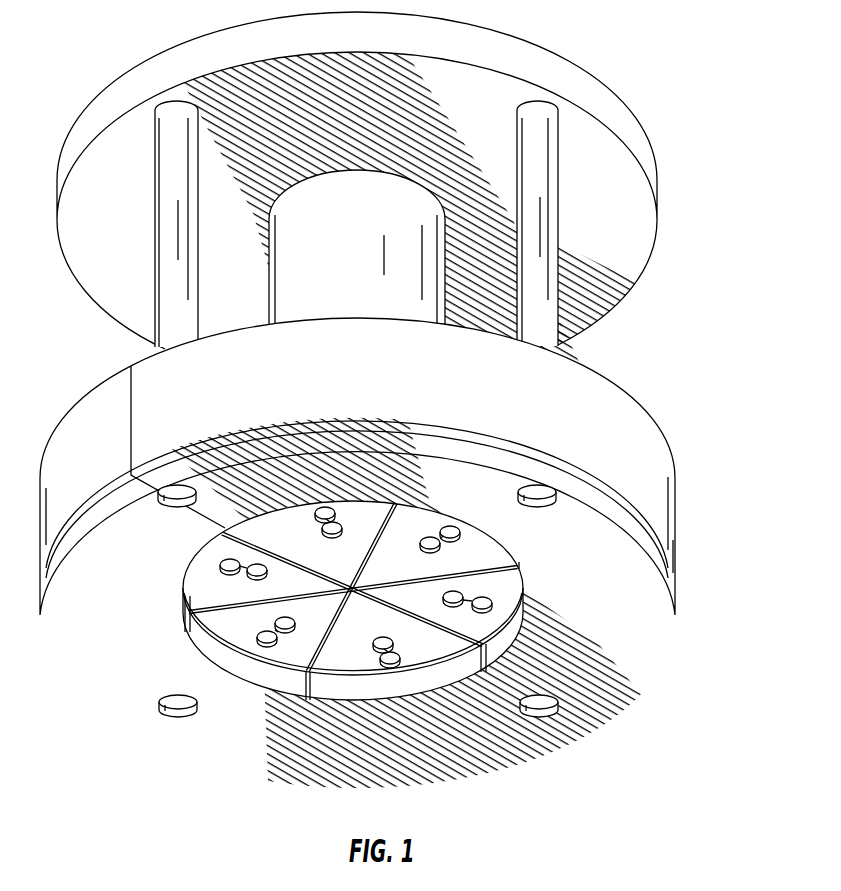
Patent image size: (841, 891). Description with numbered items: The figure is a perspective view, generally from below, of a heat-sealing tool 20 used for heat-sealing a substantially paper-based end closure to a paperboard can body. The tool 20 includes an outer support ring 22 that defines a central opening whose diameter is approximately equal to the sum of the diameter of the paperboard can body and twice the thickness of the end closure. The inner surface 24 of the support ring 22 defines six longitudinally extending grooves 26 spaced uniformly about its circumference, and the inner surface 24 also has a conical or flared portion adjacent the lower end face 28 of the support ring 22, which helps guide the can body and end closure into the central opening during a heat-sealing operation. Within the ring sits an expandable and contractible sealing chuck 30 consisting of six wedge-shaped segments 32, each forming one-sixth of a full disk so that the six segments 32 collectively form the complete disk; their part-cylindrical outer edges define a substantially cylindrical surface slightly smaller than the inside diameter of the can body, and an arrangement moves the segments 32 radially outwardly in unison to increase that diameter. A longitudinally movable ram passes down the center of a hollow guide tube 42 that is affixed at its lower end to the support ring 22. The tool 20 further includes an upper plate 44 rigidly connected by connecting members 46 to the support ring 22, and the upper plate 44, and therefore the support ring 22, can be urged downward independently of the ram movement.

The heat-sealing tool 20 is at (391, 420).
The outer support ring 22 is at (655, 500).
The inner surface 24 is at (235, 670).
The longitudinally extending grooves 26 is at (487, 665).
The lower end face 28 is at (644, 609).
The sealing chuck 30 is at (222, 642).
The wedge-shaped segments 32 is at (513, 590).
The hollow guide tube 42 is at (295, 268).
The upper plate 44 is at (635, 233).
The connecting members 46 is at (578, 184).